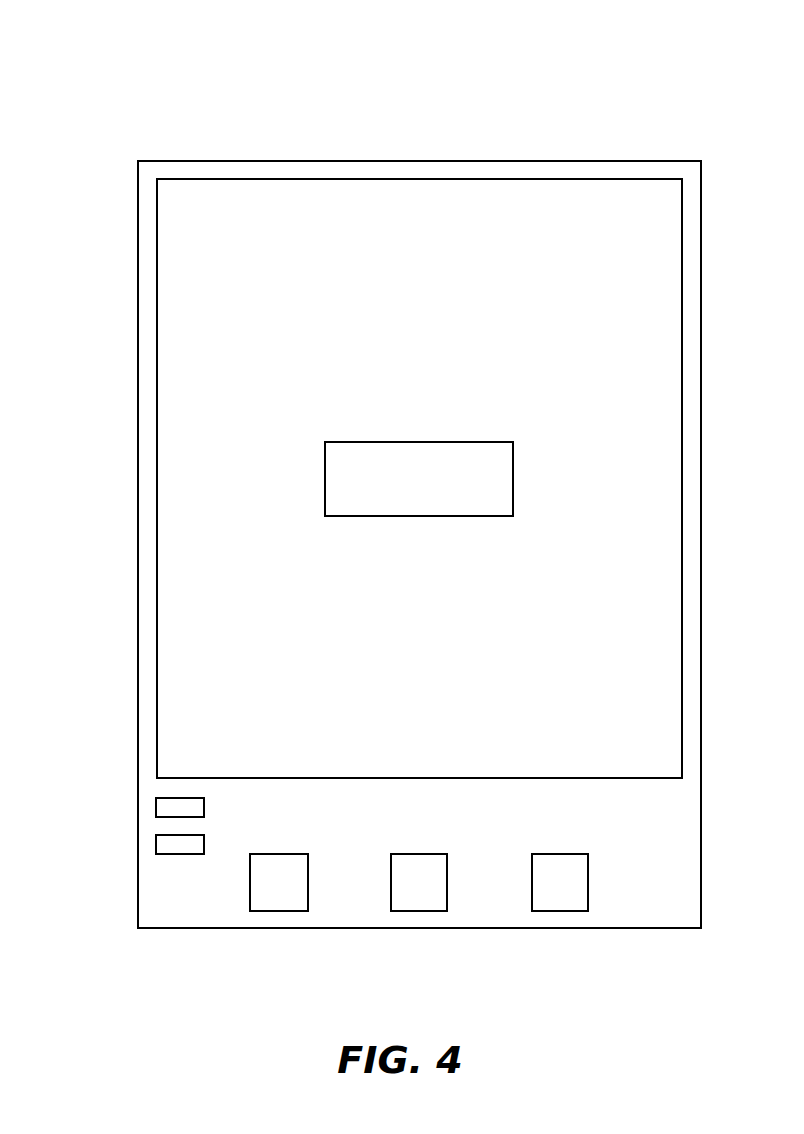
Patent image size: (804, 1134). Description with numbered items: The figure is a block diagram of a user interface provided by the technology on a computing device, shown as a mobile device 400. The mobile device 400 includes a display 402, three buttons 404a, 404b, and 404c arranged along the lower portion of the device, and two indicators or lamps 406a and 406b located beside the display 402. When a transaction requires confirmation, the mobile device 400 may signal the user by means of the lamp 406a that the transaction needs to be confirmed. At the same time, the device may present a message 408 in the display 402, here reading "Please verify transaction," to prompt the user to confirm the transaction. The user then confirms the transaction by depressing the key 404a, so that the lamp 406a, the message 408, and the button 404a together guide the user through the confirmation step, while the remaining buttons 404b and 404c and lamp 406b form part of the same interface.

The mobile device 400 is at (627, 112).
The display 402 is at (682, 368).
The button 404a is at (282, 911).
The button 404b is at (418, 911).
The button 404c is at (559, 911).
The lamp 406a is at (156, 809).
The lamp 406b is at (156, 846).
The message 408 is at (325, 478).